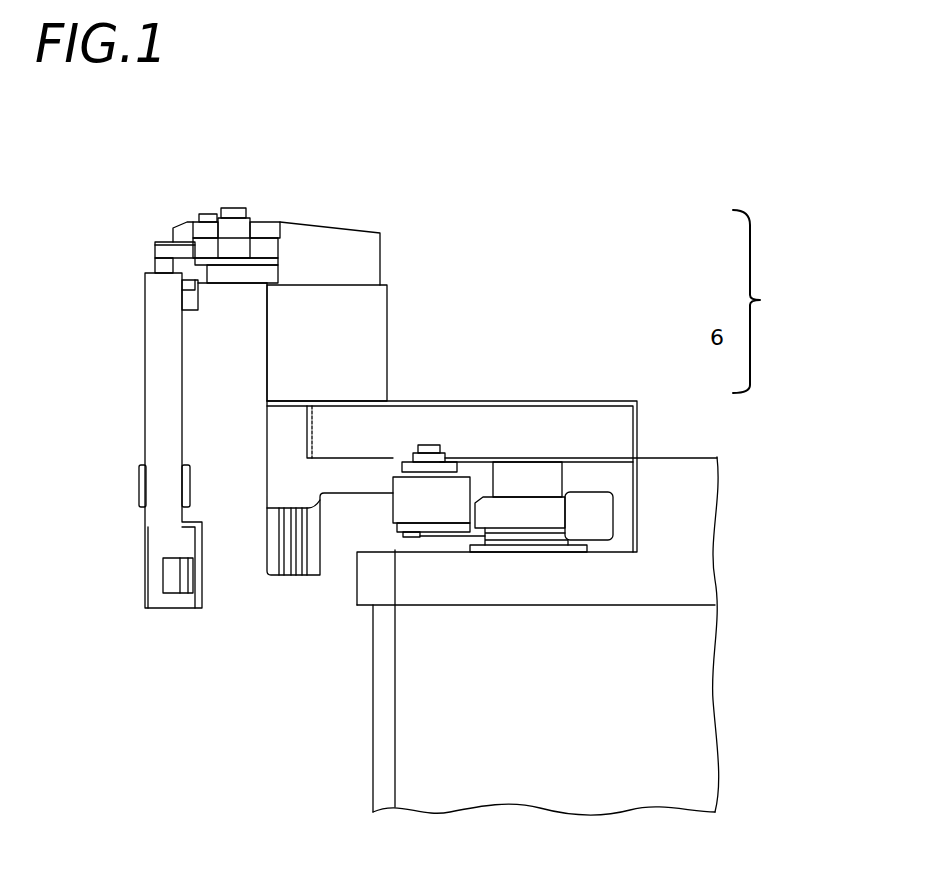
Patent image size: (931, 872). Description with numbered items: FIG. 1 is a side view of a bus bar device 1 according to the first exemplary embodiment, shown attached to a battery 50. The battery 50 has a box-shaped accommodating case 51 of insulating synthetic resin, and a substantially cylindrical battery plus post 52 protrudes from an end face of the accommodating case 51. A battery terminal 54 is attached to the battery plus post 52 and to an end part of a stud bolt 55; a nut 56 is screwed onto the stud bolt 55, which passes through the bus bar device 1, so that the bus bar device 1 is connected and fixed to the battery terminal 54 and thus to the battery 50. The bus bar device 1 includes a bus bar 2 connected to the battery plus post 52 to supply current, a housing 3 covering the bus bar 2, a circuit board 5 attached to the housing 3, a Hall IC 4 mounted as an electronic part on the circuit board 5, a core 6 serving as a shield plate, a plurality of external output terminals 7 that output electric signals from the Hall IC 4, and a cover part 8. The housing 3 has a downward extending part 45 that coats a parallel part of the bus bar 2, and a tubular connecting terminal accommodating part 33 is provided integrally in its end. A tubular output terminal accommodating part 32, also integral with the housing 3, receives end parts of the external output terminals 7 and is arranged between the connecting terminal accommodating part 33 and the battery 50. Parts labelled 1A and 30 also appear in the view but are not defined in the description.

The bus bar device 1 is at (582, 260).
The stacked components 1A is at (766, 301).
The bus bar 2 is at (717, 214).
The housing 3 is at (717, 252).
The Hall IC 4 is at (717, 280).
The circuit board 5 is at (717, 308).
The core 6 is at (370, 315).
The external output terminals 7 is at (717, 365).
The cover part 8 is at (717, 395).
The clamp unit 30 is at (245, 222).
The output terminal accommodating part 32 is at (275, 560).
The connecting terminal accommodating part 33 is at (168, 602).
The downward extending part 45 is at (158, 380).
The battery 50 is at (722, 722).
The accommodating case 51 is at (688, 688).
The battery plus post 52 is at (530, 473).
The battery terminal 54 is at (548, 517).
The stud bolt 55 is at (443, 458).
The nut 56 is at (407, 472).